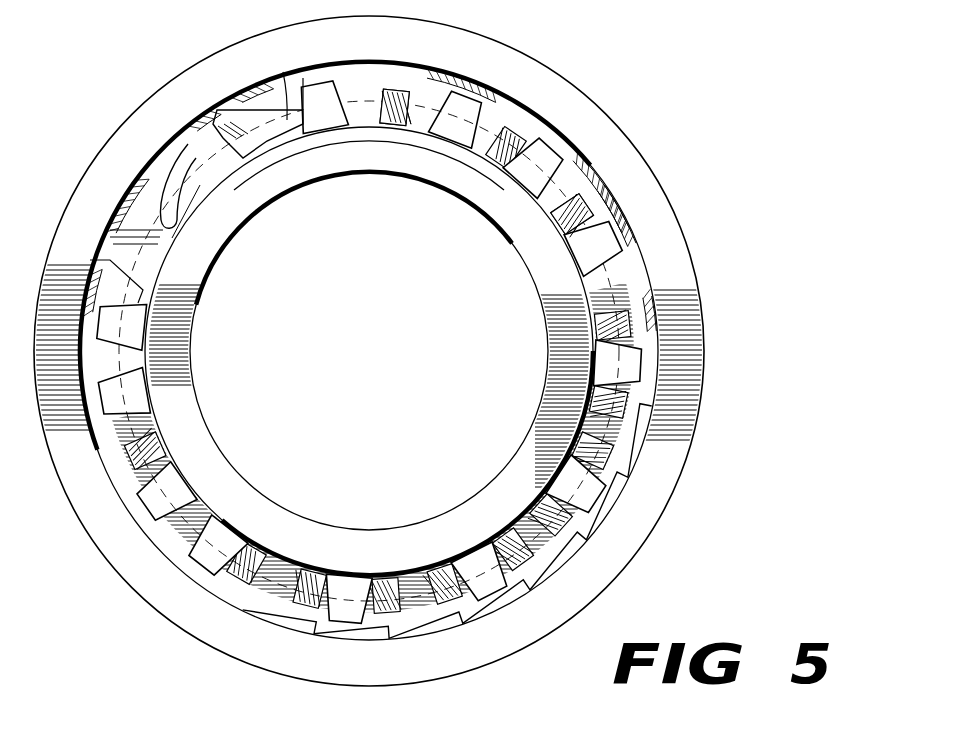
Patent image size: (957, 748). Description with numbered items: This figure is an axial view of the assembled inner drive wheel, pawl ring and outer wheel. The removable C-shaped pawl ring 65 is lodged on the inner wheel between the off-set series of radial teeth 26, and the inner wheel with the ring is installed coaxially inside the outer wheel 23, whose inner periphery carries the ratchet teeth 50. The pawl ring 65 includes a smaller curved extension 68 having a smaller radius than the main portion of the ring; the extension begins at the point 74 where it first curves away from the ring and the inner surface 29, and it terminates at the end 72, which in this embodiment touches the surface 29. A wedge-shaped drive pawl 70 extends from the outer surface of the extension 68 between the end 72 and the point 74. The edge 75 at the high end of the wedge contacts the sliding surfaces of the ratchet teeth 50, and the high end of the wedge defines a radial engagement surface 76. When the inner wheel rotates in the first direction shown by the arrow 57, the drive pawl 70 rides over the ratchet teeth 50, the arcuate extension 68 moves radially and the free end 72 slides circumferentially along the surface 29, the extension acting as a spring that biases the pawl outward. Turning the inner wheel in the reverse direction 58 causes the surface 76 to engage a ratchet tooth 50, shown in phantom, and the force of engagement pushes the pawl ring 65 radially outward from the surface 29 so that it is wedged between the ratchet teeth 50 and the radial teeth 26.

The outer wheel 23 is at (115, 140).
The radial teeth 26 is at (497, 98).
The inner surface 29 is at (263, 140).
The ratchet teeth 50 is at (585, 104).
The first direction arrow 57 is at (402, 159).
The reverse direction 58 is at (336, 159).
The pawl ring 65 is at (388, 100).
The curved extension 68 is at (296, 118).
The drive pawl 70 is at (222, 128).
The end 72 is at (157, 213).
The point 74 is at (384, 103).
The edge 75 is at (631, 247).
The radial engagement surface 76 is at (644, 260).